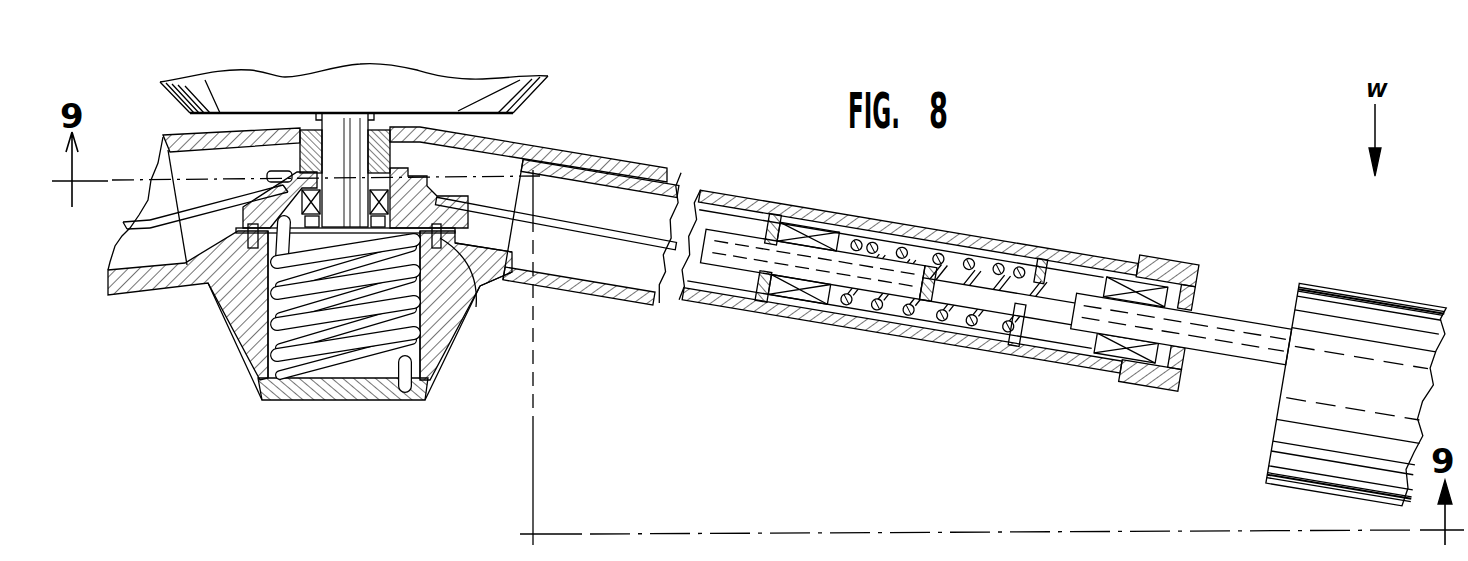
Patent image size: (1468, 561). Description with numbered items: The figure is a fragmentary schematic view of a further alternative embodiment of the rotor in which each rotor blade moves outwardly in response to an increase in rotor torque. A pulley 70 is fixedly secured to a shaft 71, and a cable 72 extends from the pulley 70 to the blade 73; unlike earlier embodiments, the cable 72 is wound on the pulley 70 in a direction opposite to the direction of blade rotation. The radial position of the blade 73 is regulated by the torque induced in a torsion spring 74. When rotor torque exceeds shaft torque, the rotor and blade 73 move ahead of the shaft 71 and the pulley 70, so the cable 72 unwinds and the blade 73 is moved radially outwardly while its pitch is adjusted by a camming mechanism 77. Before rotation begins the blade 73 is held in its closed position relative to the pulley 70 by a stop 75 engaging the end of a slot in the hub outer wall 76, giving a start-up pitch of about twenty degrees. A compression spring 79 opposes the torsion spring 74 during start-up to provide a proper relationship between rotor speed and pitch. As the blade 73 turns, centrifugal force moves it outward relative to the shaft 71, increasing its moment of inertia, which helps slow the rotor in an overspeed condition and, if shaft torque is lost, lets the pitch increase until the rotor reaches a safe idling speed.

The pulley 70 is at (296, 168).
The shaft 71 is at (345, 147).
The cable 72 is at (143, 265).
The blade 73 is at (1250, 377).
The torsion spring 74 is at (302, 358).
The stop 75 is at (468, 300).
The hub outer wall 76 is at (472, 290).
The camming mechanism 77 is at (1017, 324).
The compression spring 79 is at (937, 286).